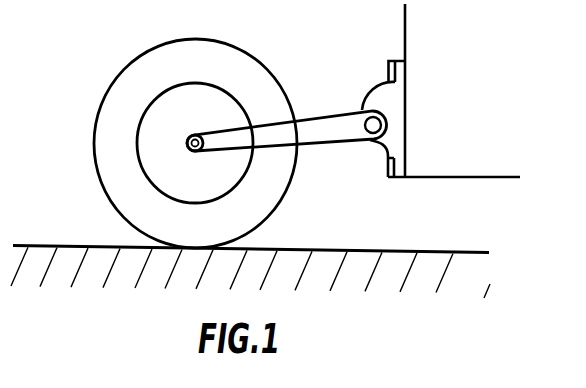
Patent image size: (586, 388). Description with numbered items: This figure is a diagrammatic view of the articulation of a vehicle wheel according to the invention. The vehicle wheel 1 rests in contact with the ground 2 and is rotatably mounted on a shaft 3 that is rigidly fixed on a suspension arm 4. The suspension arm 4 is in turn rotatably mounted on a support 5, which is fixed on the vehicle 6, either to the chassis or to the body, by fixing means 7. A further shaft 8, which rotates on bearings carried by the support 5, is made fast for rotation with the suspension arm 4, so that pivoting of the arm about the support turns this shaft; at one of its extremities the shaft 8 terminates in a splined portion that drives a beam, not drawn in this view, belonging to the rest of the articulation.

The vehicle wheel 1 is at (96, 130).
The ground 2 is at (320, 262).
The shaft 3 is at (200, 138).
The suspension arm 4 is at (302, 127).
The support 5 is at (372, 100).
The vehicle 6 is at (472, 153).
The fixing means 7 is at (388, 168).
The shaft 8 is at (372, 124).